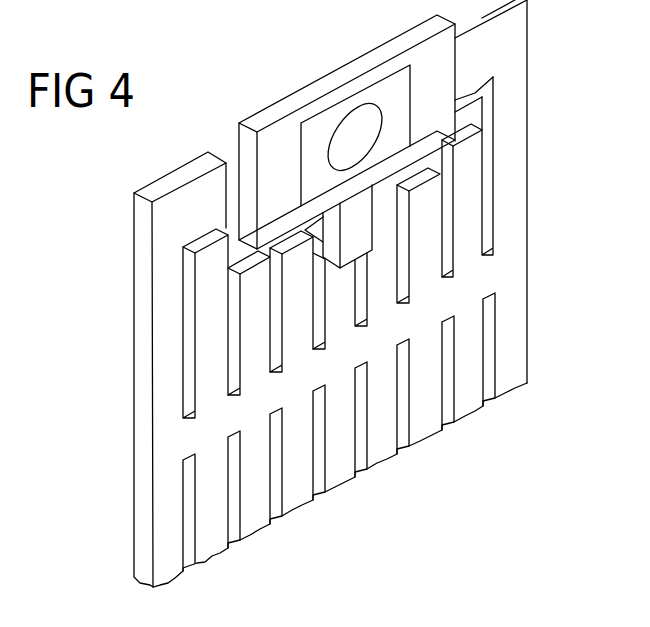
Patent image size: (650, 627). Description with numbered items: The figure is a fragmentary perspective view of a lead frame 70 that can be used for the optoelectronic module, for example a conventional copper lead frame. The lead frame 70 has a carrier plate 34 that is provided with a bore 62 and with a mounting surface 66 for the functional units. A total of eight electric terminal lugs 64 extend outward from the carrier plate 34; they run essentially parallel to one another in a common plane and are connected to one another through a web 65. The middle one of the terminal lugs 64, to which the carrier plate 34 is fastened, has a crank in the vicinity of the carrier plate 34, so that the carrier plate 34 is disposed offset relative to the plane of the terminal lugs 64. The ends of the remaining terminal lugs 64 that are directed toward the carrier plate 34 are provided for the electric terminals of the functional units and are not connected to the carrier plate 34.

The carrier plate 34 is at (347, 140).
The bore 62 is at (347, 123).
The electric terminal lugs 64 is at (295, 305).
The web 65 is at (448, 292).
The mounting surface 66 is at (320, 133).
The lead frame 70 is at (301, 293).